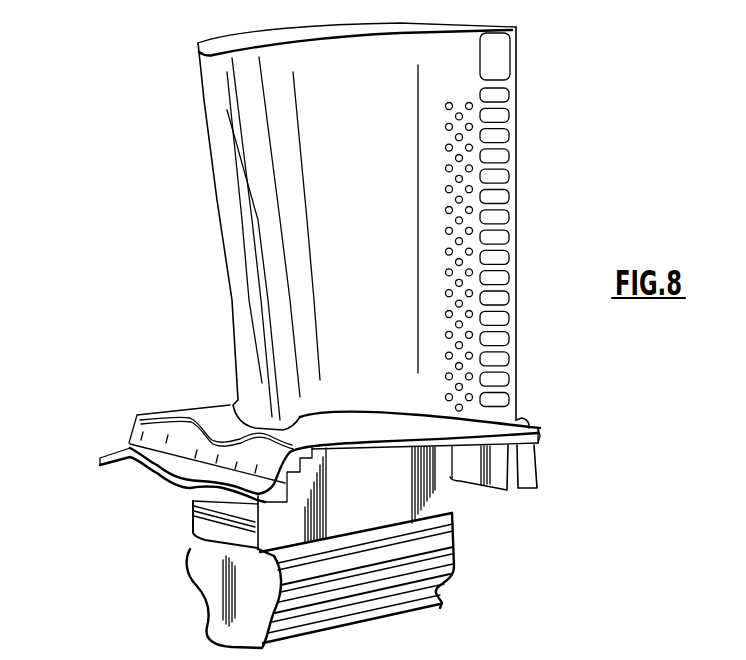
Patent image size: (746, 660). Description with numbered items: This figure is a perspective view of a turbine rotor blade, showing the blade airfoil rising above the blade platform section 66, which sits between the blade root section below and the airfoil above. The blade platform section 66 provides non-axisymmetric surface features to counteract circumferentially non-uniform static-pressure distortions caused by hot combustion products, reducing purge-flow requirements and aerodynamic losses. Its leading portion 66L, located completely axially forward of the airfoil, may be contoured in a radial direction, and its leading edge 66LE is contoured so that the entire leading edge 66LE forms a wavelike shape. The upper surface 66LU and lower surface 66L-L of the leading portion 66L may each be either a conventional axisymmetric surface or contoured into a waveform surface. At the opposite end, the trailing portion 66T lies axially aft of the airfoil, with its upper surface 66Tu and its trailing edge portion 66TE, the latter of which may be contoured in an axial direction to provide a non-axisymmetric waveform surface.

The blade platform section 66 is at (338, 335).
The leading portion 66L is at (165, 451).
The upper surface 66LU is at (128, 443).
The leading edge 66LE is at (160, 485).
The lower surface 66L-L is at (268, 508).
The trailing portion 66T is at (577, 418).
The upper surface of trailing portion 66Tu is at (528, 425).
The trailing edge portion 66TE is at (541, 433).